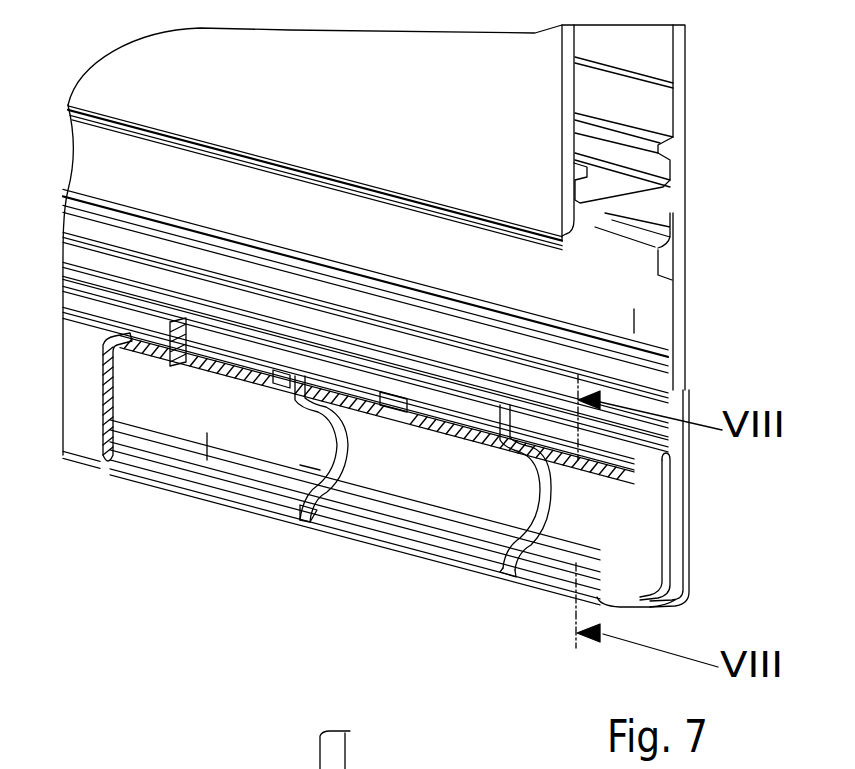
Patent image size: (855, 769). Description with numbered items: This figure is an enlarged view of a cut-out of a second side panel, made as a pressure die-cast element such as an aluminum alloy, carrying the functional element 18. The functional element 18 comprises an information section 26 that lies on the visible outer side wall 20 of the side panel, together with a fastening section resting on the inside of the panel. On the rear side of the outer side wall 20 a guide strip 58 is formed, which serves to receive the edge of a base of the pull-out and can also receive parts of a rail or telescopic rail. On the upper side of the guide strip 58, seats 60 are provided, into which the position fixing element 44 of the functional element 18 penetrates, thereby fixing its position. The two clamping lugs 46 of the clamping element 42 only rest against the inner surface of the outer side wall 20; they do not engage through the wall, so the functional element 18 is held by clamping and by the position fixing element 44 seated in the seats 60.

The functional element 18 is at (672, 606).
The outer side wall 20 is at (672, 497).
The information section 26 is at (689, 553).
The clamping element 42 is at (236, 433).
The position fixing element 44 is at (300, 400).
The clamping lugs 46 is at (337, 430).
The guide strip 58 is at (78, 437).
The seats 60 is at (280, 382).